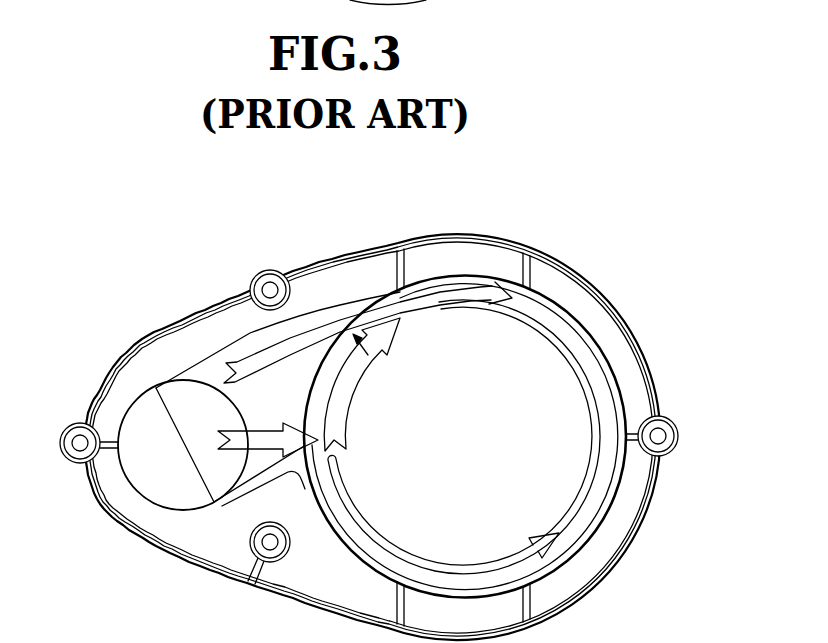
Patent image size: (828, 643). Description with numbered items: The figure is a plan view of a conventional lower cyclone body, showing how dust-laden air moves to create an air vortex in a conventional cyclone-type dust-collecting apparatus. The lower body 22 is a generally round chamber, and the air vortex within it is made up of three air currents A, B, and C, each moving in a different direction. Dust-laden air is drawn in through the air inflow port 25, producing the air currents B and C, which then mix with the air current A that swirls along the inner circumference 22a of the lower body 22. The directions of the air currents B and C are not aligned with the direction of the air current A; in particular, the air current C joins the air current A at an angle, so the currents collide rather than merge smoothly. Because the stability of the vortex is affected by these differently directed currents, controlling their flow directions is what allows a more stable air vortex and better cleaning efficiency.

The lower body 22 is at (577, 268).
The inner circumference 22a is at (496, 290).
The air inflow port 25 is at (174, 432).
The air current A is at (368, 332).
The air current B is at (268, 430).
The air current C is at (462, 437).